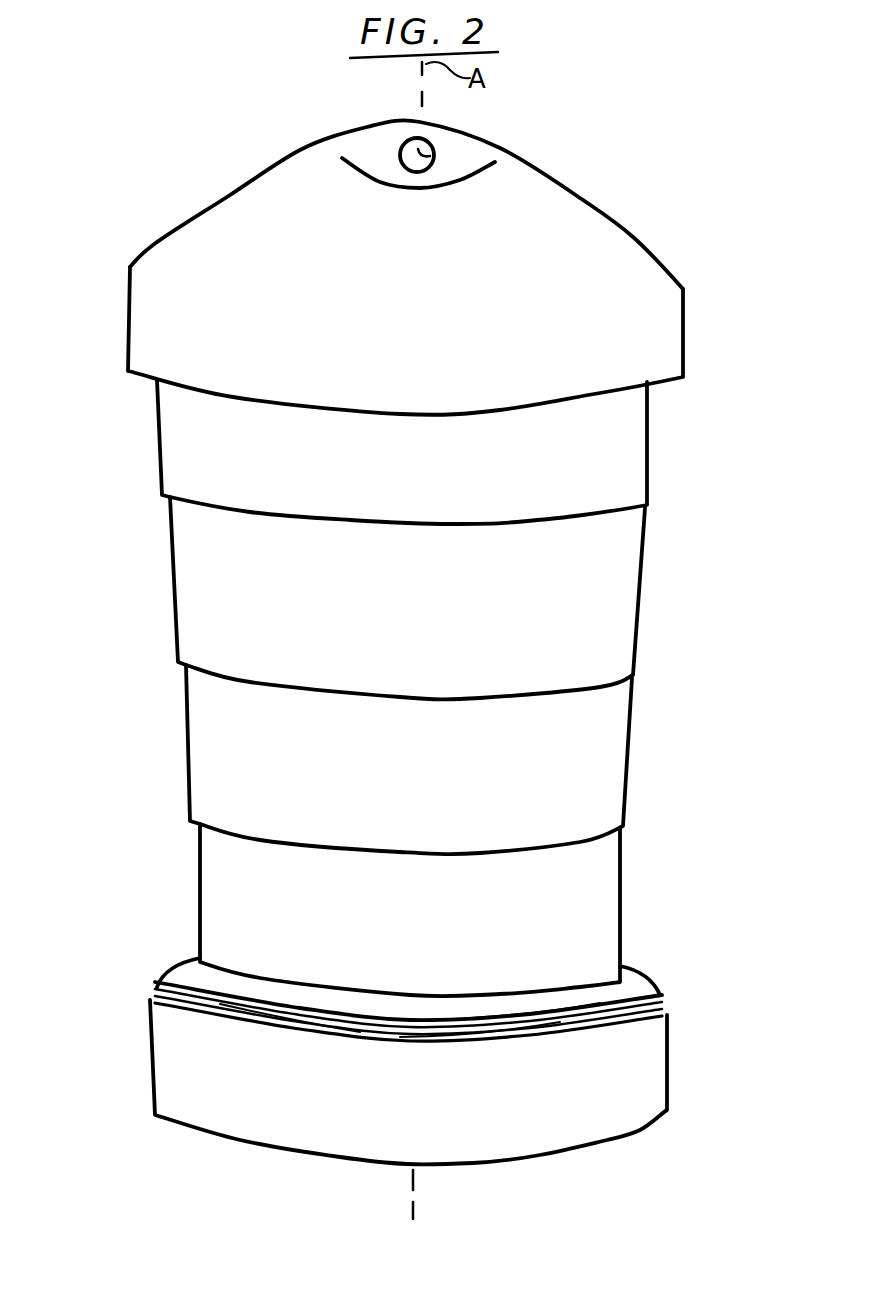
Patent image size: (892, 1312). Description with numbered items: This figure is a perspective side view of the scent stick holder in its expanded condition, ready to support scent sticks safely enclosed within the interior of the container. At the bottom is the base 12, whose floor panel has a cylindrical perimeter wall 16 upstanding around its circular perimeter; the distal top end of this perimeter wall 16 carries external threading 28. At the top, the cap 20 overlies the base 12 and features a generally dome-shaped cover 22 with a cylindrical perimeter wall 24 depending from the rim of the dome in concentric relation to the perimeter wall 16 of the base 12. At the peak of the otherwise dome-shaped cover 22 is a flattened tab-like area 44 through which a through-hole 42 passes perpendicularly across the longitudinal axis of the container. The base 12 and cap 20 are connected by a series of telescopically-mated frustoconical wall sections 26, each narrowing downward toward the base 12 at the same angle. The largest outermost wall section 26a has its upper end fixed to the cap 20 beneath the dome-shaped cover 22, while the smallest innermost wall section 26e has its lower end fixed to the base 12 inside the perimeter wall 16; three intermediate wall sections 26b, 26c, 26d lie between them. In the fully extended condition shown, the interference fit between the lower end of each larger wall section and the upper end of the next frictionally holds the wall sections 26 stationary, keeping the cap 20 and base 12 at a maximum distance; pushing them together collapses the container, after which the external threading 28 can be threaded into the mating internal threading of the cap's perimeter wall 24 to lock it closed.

The base 12 is at (668, 1071).
The perimeter wall 16 is at (663, 1087).
The cap 20 is at (580, 209).
The dome-shaped cover 22 is at (528, 197).
The perimeter wall 24 is at (687, 330).
The frustoconical wall sections 26 is at (150, 385).
The largest outermost wall section 26a is at (640, 447).
The intermediate wall section 26b is at (613, 597).
The intermediate wall section 26c is at (607, 757).
The intermediate wall section 26d is at (603, 893).
The smallest innermost wall section 26e is at (603, 993).
The external threading 28 is at (665, 1008).
The through-hole 42 is at (438, 150).
The flattened tab-like area 44 is at (384, 150).